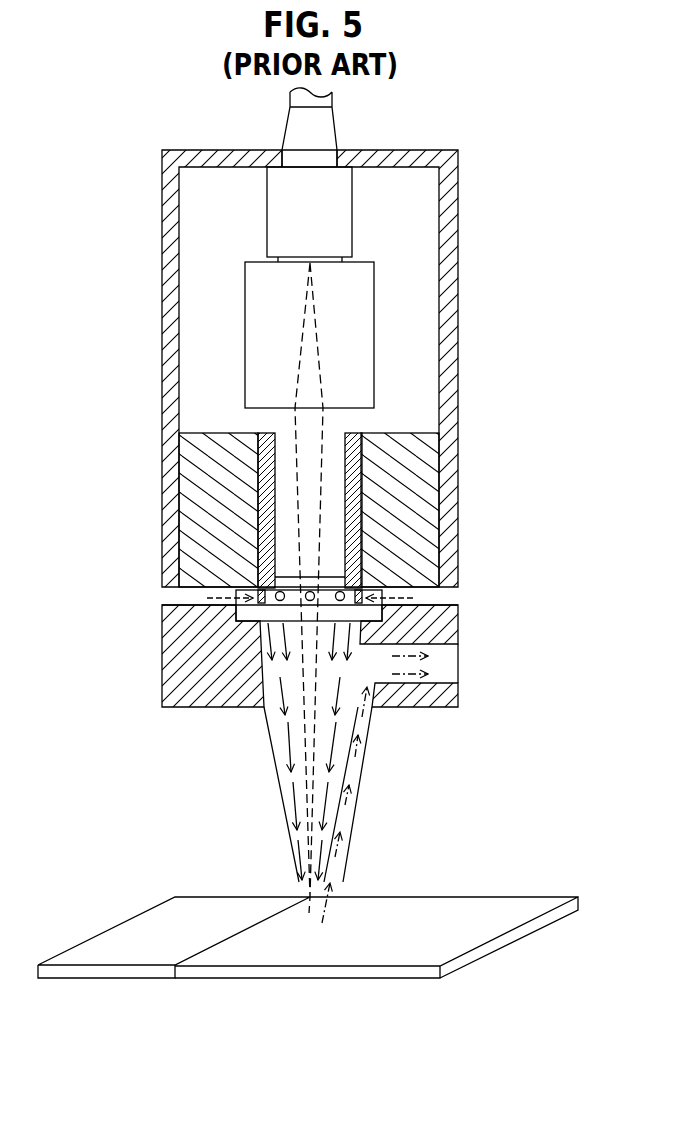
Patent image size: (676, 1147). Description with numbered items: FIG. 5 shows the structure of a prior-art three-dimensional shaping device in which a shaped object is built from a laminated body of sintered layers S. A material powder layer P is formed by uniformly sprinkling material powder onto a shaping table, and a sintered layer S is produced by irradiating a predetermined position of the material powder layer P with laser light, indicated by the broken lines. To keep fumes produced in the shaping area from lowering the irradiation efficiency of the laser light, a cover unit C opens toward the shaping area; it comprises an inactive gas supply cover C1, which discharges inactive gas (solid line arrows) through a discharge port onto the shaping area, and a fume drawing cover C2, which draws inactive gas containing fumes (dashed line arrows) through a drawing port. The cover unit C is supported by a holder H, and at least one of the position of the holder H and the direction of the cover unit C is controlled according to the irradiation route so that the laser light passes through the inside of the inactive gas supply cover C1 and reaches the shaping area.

The holder H is at (458, 251).
The cover unit C is at (283, 812).
The inactive gas supply cover C1 is at (290, 778).
The fume drawing cover C2 is at (359, 775).
The material powder layer P is at (165, 932).
The sintered layer S is at (447, 918).